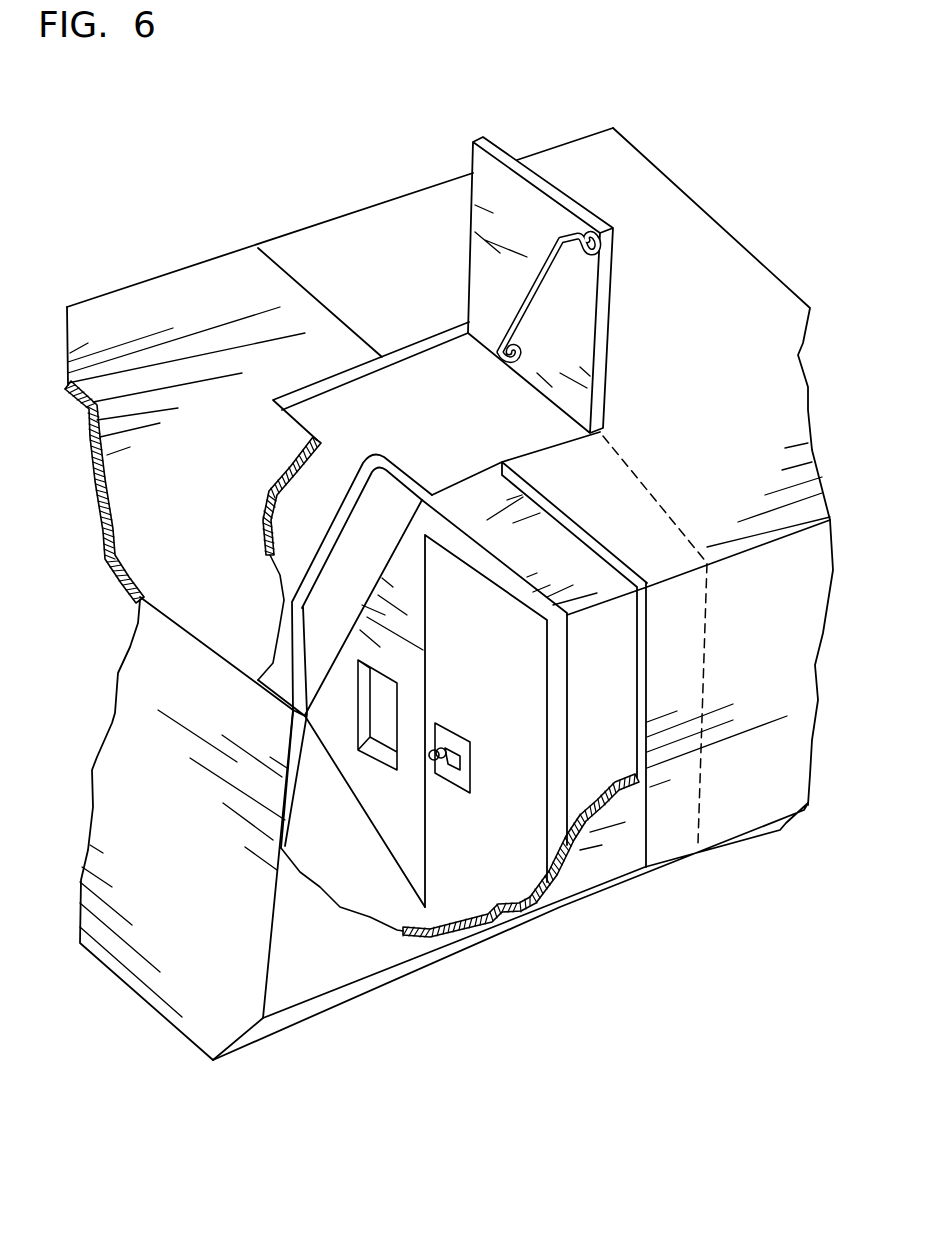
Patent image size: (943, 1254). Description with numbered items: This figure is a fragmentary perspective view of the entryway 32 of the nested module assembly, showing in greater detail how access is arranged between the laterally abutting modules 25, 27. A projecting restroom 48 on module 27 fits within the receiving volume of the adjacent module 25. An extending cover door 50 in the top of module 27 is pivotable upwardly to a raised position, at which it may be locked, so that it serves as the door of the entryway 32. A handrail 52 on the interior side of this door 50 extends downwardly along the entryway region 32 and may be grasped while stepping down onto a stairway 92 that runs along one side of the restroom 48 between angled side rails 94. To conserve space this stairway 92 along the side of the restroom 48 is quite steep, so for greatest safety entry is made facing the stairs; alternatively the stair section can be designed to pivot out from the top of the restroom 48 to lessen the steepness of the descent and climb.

The module 25 is at (185, 268).
The module 27 is at (712, 220).
The entryway region 32 is at (413, 343).
The restroom 48 is at (578, 757).
The cover door 50 is at (548, 178).
The handrail 52 is at (577, 233).
The stairway 92 is at (370, 597).
The angled side rails 94 is at (342, 505).